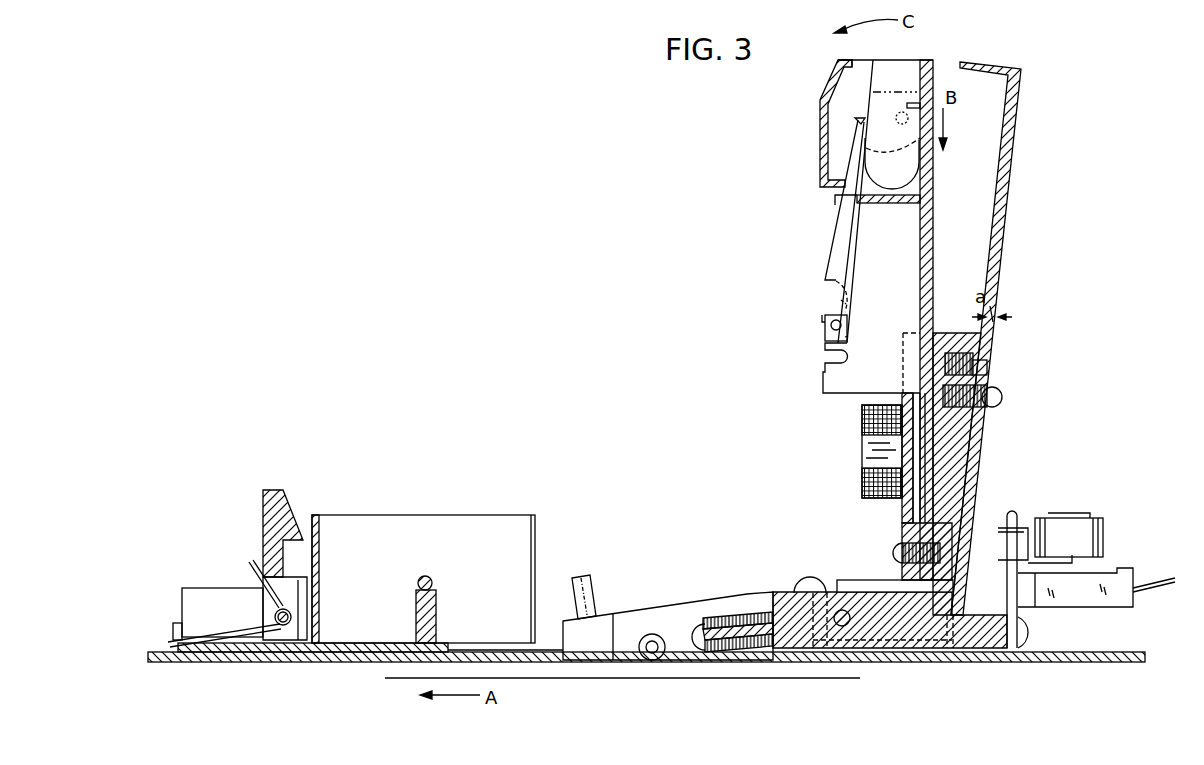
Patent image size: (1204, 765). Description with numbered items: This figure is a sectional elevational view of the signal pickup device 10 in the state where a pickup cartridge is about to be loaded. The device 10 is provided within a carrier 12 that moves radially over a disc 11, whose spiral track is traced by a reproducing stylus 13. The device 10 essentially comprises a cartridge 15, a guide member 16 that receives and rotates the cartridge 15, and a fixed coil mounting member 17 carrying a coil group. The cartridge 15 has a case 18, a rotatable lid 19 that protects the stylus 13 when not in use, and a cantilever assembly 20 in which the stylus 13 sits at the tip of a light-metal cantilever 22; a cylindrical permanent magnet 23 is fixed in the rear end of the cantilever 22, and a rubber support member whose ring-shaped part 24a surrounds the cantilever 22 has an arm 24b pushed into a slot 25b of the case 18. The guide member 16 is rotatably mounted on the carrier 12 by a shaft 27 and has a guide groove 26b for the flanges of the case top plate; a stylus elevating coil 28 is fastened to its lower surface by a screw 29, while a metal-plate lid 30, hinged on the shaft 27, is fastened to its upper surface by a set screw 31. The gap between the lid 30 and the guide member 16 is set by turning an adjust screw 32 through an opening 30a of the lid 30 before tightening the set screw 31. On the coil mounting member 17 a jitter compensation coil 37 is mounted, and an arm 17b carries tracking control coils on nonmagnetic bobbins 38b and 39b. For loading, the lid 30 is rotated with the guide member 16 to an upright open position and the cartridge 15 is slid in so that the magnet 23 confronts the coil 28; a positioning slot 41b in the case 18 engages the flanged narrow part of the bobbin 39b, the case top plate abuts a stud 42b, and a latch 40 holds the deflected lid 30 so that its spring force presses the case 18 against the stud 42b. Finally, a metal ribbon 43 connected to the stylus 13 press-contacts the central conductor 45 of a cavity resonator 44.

The signal pickup device 10 is at (684, 246).
The disc 11 is at (385, 678).
The carrier 12 is at (966, 663).
The reproducing stylus 13 is at (857, 117).
The cartridge 15 is at (812, 155).
The guide member 16 is at (966, 444).
The coil mounting member 17 is at (901, 663).
The arm of coil mounting member 17b is at (675, 607).
The case 18 is at (934, 231).
The lid 19 is at (826, 98).
The cantilever assembly 20 is at (828, 232).
The cantilever 22 is at (857, 249).
The permanent magnet 23 is at (848, 337).
The ring-shaped part of elastic support member 24a is at (840, 312).
The arm of elastic support member 24b is at (804, 297).
The slot of case 25b is at (823, 322).
The guide groove 26b is at (925, 474).
The shaft 27 is at (828, 598).
The stylus elevating coil 28 is at (862, 478).
The screw 29 is at (888, 549).
The lid 30 is at (1016, 207).
The opening of lid 30a is at (990, 372).
The set screw 31 is at (1002, 399).
The adjust screw 32 is at (975, 353).
The jitter compensation coil 37 is at (739, 610).
The bobbin 38b is at (652, 660).
The bobbin 39b is at (700, 651).
The latch 40 is at (263, 515).
The positioning slot 41b is at (830, 360).
The stud 42b is at (594, 589).
The metal ribbon 43 is at (917, 177).
The cavity resonator 44 is at (490, 517).
The central conductor 45 is at (432, 583).